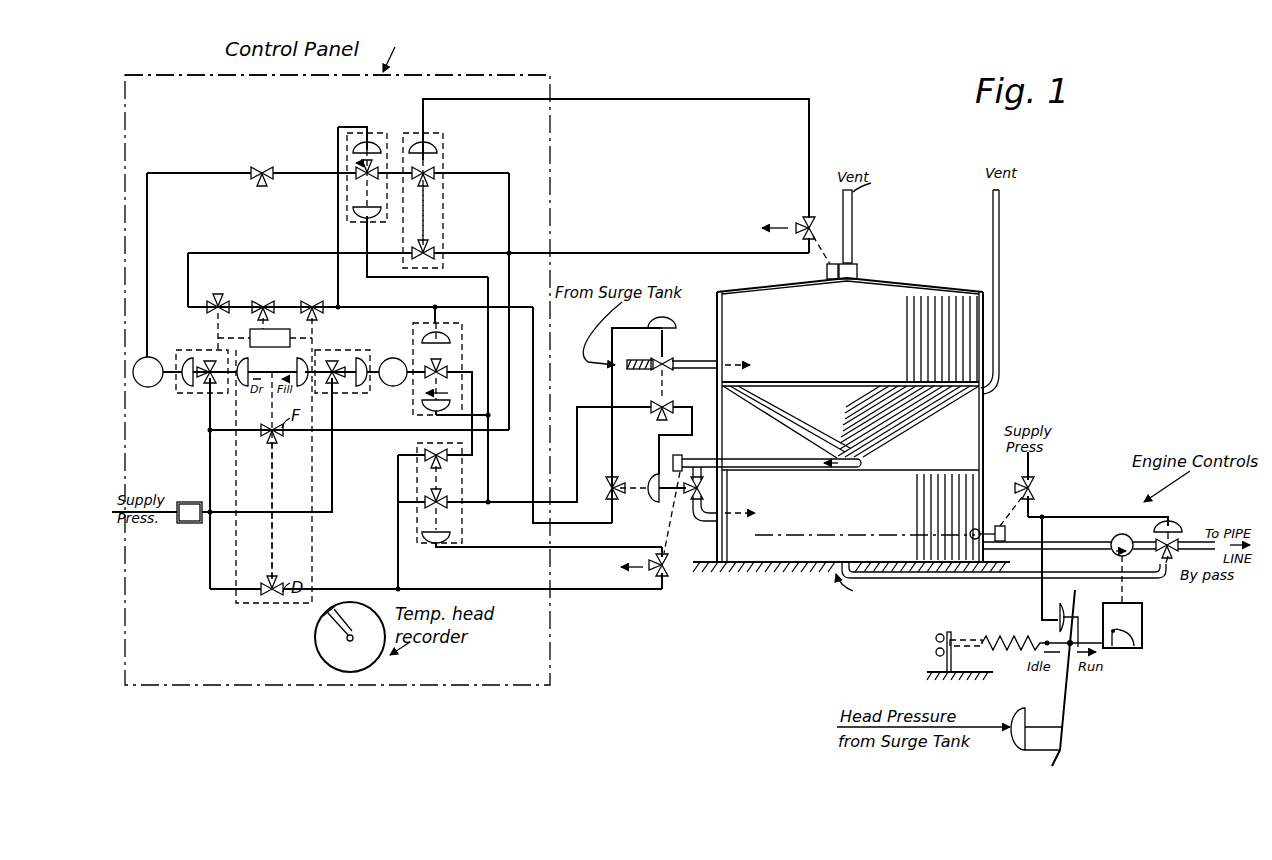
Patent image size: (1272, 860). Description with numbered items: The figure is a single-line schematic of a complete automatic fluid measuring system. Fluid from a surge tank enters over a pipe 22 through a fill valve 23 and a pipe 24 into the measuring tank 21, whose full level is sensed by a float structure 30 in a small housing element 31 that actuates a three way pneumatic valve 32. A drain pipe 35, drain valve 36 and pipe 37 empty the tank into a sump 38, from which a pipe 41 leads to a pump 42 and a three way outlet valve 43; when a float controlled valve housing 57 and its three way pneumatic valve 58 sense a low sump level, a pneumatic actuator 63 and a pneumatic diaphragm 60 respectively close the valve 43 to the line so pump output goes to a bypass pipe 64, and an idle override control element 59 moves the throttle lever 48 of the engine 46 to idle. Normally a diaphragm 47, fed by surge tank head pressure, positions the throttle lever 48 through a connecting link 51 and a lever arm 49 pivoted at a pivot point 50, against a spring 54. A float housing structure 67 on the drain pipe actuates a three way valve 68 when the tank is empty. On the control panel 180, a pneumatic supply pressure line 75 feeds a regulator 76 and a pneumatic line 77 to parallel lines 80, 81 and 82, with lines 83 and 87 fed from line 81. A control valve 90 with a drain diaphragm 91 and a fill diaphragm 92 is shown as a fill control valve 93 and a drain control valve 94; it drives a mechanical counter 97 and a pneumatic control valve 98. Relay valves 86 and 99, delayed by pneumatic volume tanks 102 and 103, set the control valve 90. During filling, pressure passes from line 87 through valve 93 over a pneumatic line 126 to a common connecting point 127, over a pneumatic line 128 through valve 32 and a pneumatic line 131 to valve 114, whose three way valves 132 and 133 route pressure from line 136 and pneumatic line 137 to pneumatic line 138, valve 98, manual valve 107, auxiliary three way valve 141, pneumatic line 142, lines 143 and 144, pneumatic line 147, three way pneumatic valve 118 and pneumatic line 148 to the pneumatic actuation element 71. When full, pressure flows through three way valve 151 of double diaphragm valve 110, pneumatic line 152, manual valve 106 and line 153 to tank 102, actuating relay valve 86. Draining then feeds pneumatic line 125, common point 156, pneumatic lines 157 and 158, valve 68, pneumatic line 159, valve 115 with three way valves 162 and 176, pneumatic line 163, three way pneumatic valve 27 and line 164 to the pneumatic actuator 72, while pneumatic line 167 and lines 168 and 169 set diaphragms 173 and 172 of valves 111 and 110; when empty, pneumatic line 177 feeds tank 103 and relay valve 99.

The measuring tank 21 is at (907, 300).
The pipe 22 is at (646, 369).
The fill valve 23 is at (672, 360).
The pipe 24 is at (690, 361).
The three way pneumatic valve 27 is at (655, 416).
The float structure 30 is at (827, 272).
The housing element 31 is at (857, 270).
The three way pneumatic valve 32 is at (813, 226).
The drain pipe 35 is at (757, 459).
The drain valve 36 is at (688, 504).
The pipe 37 is at (710, 527).
The sump 38 is at (790, 508).
The pipe 41 is at (1060, 543).
The pump 42 is at (1157, 530).
The three way outlet valve 43 is at (1178, 528).
The engine 46 is at (1143, 618).
The diaphragm 47 is at (1012, 718).
The throttle lever 48 is at (1120, 650).
The lever arm 49 is at (1068, 706).
The pivot point 50 is at (1061, 753).
The connecting link 51 is at (1041, 724).
The spring 54 is at (1014, 637).
The float controlled valve housing 57 is at (993, 523).
The three way pneumatic valve 58 is at (1037, 484).
The idle override control element 59 is at (1074, 614).
The pneumatic diaphragm 60 is at (1060, 604).
The pneumatic actuator 63 is at (1170, 517).
The bypass pipe 64 is at (970, 581).
The float housing structure 67 is at (683, 457).
The pneumatic three way valve 68 is at (664, 580).
The pneumatic actuation element 71 is at (668, 327).
The pneumatic actuator 72 is at (650, 501).
The pneumatic supply pressure line 75 is at (166, 522).
The regulator 76 is at (189, 501).
The pneumatic line 77 is at (205, 528).
The pneumatic line 80 is at (256, 511).
The line 81 is at (209, 440).
The line 82 is at (210, 570).
The pneumatic line 83 is at (208, 403).
The relay type three way pneumatic valve 86 is at (195, 350).
The pneumatic line 87 is at (251, 430).
The control valve 90 is at (312, 470).
The drain diaphragm 91 is at (251, 371).
The fill diaphragm 92 is at (292, 371).
The fill control valve 93 is at (277, 444).
The drain control valve 94 is at (277, 580).
The mechanical counter 97 is at (292, 341).
The pneumatic control valve 98 is at (221, 304).
The relay type three way pneumatic valve 99 is at (352, 350).
The pneumatic volume tank 102 is at (148, 387).
The pneumatic volume tank 103 is at (393, 358).
The manual three way pneumatic valve 106 is at (258, 170).
The manual three way pneumatic valve 107 is at (263, 304).
The double diaphragm actuated three way pneumatic valve 110 is at (356, 226).
The double diaphragm actuated three way pneumatic valve 111 is at (458, 340).
The single diaphragm actuated four way valve 114 is at (443, 208).
The single diaphragm actuated four way valve 115 is at (454, 500).
The three way pneumatic valve 118 is at (608, 497).
The pneumatic line 125 is at (340, 587).
The pneumatic line 126 is at (345, 430).
The common connecting point 127 is at (515, 250).
The pneumatic line 128 is at (605, 252).
The pneumatic line 131 is at (811, 130).
The three way valve 132 is at (435, 180).
The three way valve 133 is at (432, 250).
The line 136 is at (511, 180).
The pneumatic line 137 is at (490, 256).
The pneumatic line 138 is at (295, 252).
The auxiliary three way valve 141 is at (313, 304).
The pneumatic line 142 is at (340, 309).
The pneumatic line 143 is at (340, 296).
The pneumatic line 144 is at (401, 305).
The pneumatic line 147 is at (523, 303).
The pneumatic line 148 is at (611, 428).
The three way valve 151 is at (360, 178).
The pneumatic line 152 is at (300, 172).
The line 153 is at (170, 172).
The common point 156 is at (405, 587).
The pneumatic line 157 is at (475, 588).
The pneumatic line 158 is at (397, 536).
The pneumatic line 159 is at (580, 545).
The three way valve 162 is at (456, 514).
The pneumatic line 163 is at (498, 501).
The line 164 is at (669, 441).
The pneumatic line 167 is at (491, 462).
The line 168 is at (490, 414).
The line 169 is at (489, 346).
The diaphragm 172 is at (371, 216).
The diaphragm 173 is at (425, 412).
The three way valve 176 is at (422, 453).
The pneumatic line 177 is at (452, 366).
The control panel 180 is at (552, 76).